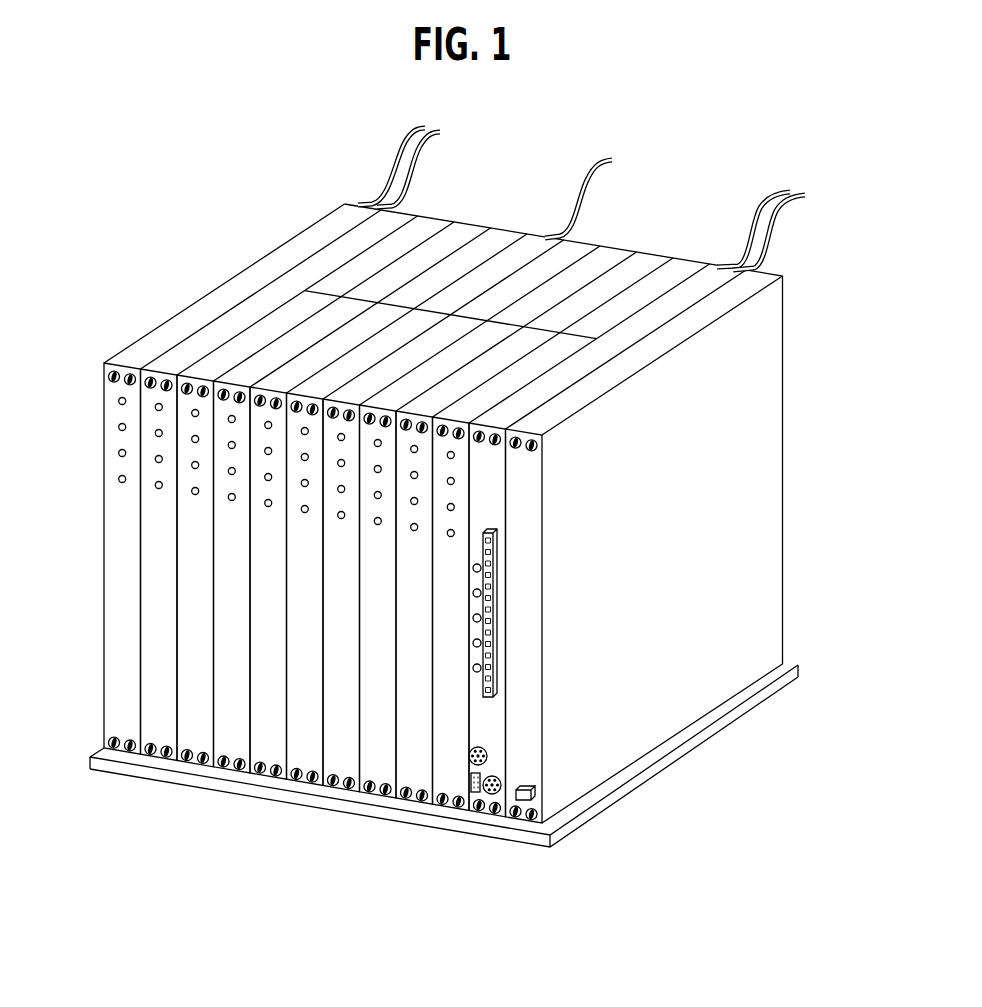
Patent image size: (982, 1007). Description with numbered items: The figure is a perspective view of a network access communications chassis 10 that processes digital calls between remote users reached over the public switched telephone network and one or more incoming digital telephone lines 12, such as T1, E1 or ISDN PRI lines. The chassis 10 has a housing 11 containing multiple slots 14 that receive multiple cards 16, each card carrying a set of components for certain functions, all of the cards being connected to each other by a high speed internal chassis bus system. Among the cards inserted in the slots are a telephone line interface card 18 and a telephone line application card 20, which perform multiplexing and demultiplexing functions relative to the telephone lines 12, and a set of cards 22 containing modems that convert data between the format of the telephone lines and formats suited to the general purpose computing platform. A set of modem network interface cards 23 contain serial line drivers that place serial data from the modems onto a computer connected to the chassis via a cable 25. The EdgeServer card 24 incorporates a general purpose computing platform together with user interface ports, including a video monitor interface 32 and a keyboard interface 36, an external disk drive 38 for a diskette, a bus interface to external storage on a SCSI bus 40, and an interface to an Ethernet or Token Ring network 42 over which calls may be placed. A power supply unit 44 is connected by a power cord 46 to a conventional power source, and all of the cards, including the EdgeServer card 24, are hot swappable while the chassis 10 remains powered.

The communications chassis 10 is at (817, 407).
The housing 11 is at (681, 753).
The digital telephone lines 12 is at (392, 151).
The slots 14 is at (358, 795).
The cards 16 is at (417, 768).
The telephone line interface card 18 is at (122, 558).
The telephone line application card 20 is at (151, 713).
The set of cards containing modems 22 is at (198, 738).
The modem network interface cards 23 is at (533, 240).
The EdgeServer card 24 is at (472, 821).
The cable 25 is at (578, 189).
The video monitor interface 32 is at (477, 765).
The keyboard interface 36 is at (492, 794).
The external disk drive 38 is at (493, 607).
The SCSI bus 40 is at (773, 218).
The network 42 is at (750, 223).
The power supply unit 44 is at (524, 556).
The power cord 46 is at (530, 800).